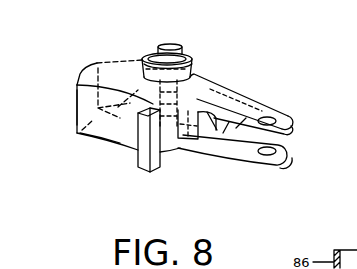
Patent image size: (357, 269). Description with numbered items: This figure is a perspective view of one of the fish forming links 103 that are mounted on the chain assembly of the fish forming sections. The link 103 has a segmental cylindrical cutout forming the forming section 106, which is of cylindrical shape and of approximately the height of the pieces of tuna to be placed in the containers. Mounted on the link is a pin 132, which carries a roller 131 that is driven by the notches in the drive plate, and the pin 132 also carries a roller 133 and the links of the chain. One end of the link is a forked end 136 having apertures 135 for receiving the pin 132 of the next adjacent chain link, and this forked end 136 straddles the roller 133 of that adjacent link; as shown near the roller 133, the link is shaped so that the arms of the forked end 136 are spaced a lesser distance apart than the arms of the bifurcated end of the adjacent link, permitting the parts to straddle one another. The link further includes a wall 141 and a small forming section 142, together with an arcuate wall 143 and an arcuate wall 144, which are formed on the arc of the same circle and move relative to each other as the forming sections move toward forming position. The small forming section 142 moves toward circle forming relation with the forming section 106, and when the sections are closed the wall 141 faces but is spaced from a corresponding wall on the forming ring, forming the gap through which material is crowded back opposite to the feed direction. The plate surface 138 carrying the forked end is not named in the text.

The link 103 is at (92, 80).
The forming section 106 is at (97, 134).
The roller 131 is at (192, 71).
The pin 132 is at (168, 46).
The roller 133 is at (187, 127).
The aperture 135 is at (290, 122).
The forked end 136 is at (253, 108).
The plate 138 is at (219, 93).
The wall 141 is at (140, 146).
The small forming section 142 is at (161, 174).
The arcuate wall 143 is at (77, 111).
The arcuate wall 144 is at (186, 145).